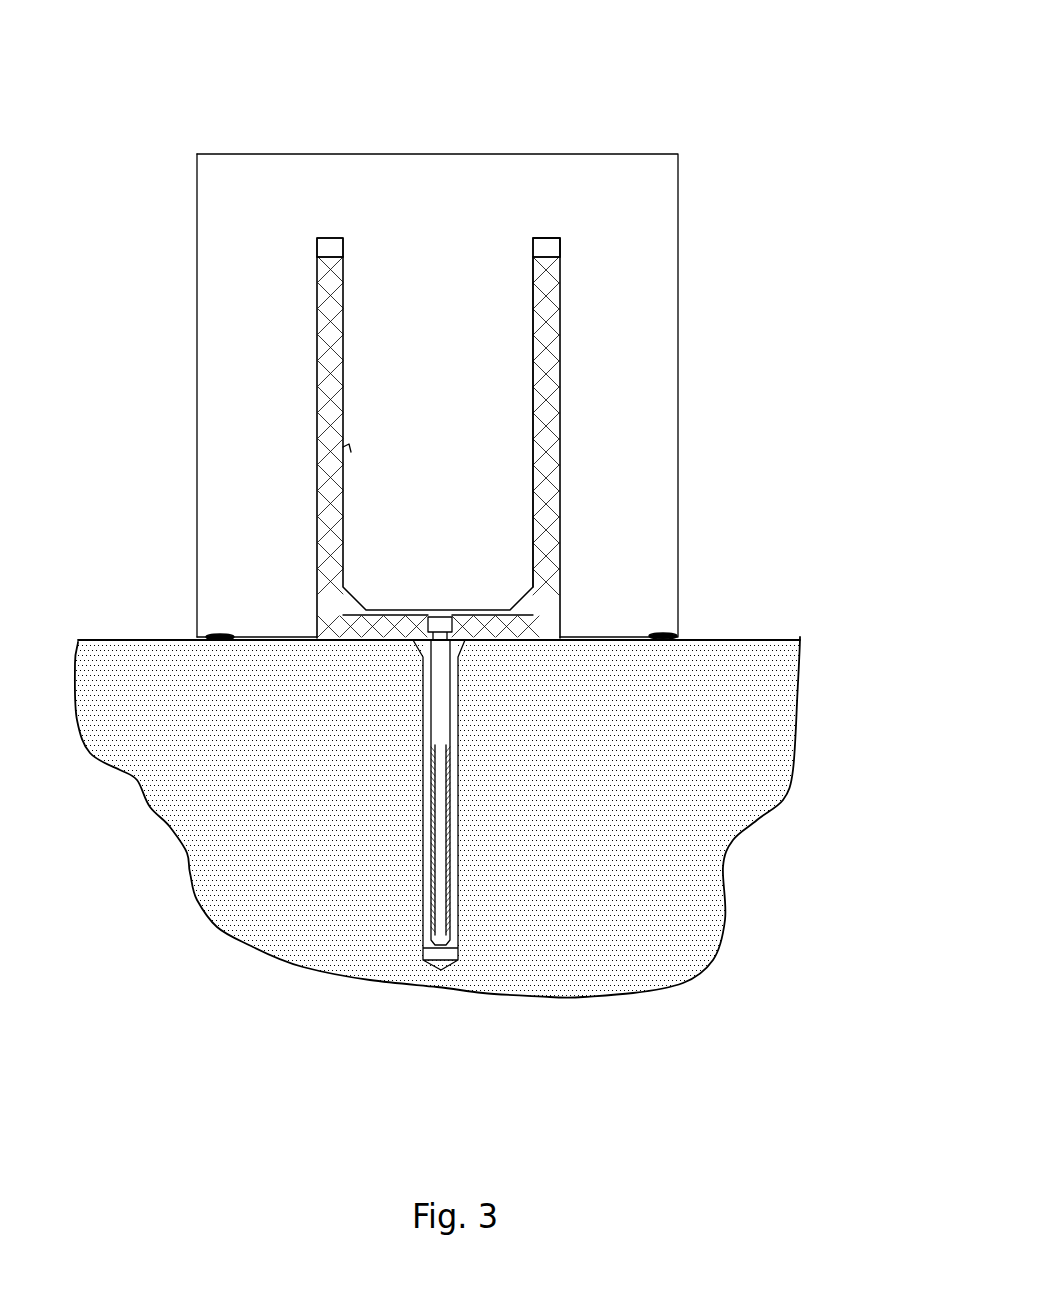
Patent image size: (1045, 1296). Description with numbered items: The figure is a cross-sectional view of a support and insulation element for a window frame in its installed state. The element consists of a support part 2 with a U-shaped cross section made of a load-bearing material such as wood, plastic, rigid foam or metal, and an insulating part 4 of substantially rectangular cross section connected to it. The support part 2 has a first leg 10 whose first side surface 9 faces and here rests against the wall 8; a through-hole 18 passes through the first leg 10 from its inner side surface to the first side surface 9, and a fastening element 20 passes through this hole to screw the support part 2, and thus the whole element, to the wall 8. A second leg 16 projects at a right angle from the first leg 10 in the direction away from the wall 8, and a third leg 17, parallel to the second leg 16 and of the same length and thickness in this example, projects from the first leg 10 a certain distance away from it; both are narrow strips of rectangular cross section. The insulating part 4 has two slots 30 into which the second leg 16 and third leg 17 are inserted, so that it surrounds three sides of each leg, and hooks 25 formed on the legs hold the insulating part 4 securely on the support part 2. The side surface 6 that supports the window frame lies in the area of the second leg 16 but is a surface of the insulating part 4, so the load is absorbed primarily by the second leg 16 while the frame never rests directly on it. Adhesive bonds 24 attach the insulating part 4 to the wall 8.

The support part 2 is at (337, 412).
The insulating part 4 is at (642, 300).
The side surface 6 is at (195, 302).
The wall 8 is at (675, 917).
The first side surface 9 is at (500, 636).
The first leg 10 is at (410, 620).
The second leg 16 is at (333, 307).
The third leg 17 is at (548, 498).
The through-hole 18 is at (529, 447).
The fastening element 20 is at (440, 857).
The adhesive bond 24 is at (677, 630).
The hook 25 is at (528, 263).
The slot 30 is at (547, 242).